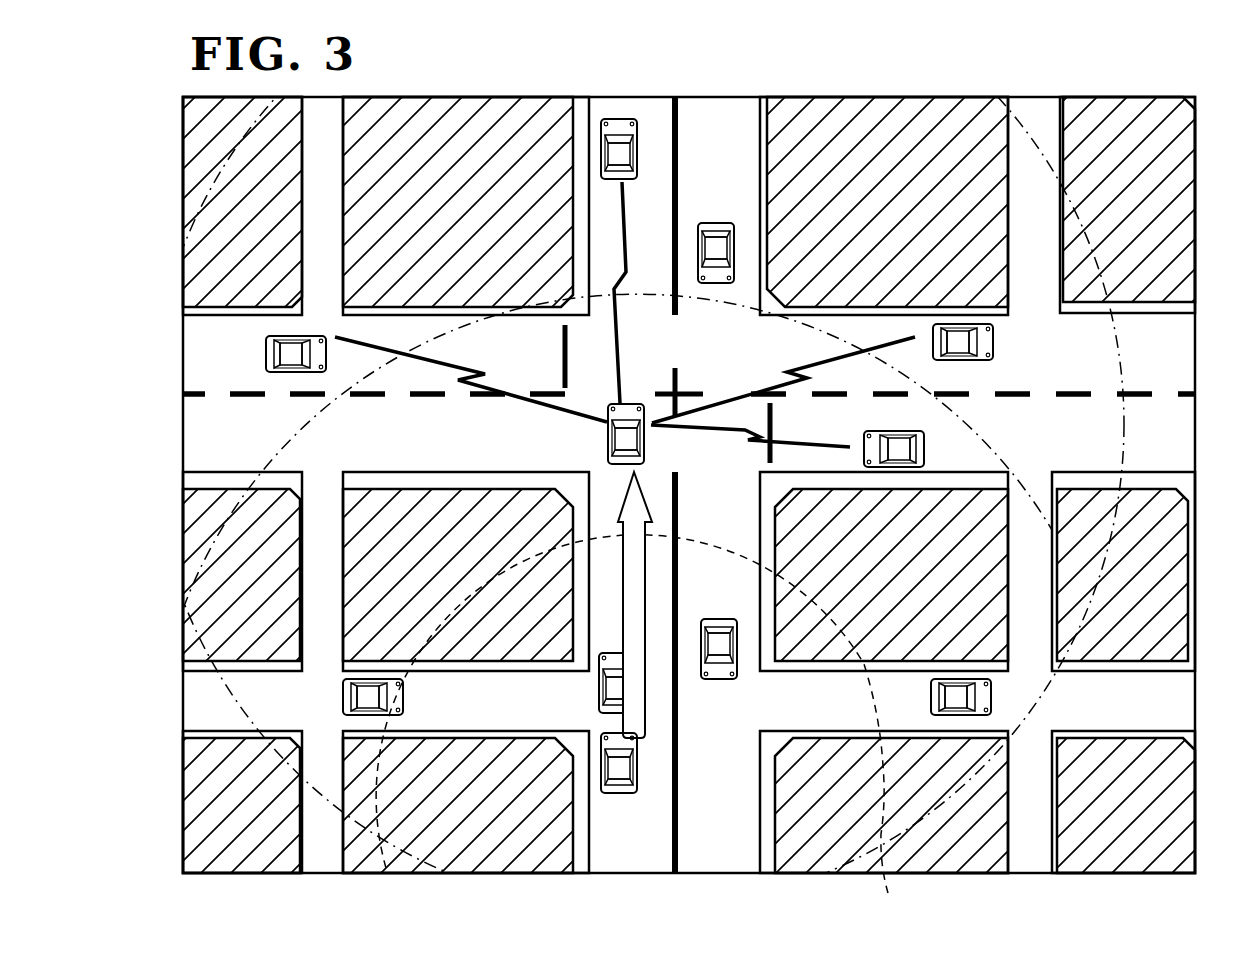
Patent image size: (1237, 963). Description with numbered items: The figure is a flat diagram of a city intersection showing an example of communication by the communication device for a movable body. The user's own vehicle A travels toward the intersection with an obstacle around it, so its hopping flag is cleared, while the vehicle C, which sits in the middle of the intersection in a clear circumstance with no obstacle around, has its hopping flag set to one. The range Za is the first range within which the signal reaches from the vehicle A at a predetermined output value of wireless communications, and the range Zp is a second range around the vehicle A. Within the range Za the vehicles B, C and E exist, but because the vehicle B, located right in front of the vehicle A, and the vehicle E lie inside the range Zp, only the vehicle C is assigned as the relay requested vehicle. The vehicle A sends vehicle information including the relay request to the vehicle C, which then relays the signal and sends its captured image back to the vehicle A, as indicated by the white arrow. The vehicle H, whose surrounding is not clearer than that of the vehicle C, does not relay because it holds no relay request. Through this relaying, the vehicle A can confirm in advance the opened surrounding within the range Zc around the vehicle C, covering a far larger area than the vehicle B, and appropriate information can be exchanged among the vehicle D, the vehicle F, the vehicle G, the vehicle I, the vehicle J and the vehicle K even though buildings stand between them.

The vehicle A is at (617, 793).
The vehicle B is at (598, 688).
The vehicle C is at (630, 403).
The vehicle D is at (732, 222).
The vehicle E is at (715, 680).
The vehicle F is at (265, 357).
The vehicle G is at (995, 342).
The vehicle H is at (923, 449).
The vehicle I is at (637, 130).
The vehicle J is at (342, 693).
The vehicle K is at (930, 693).
The range Za is at (985, 448).
The range Zc is at (1122, 347).
The range Zp is at (639, 729).